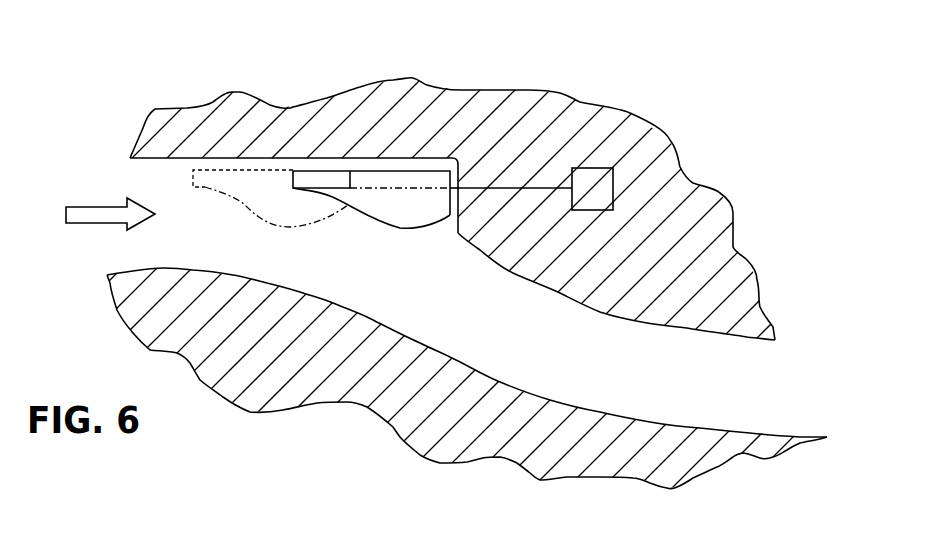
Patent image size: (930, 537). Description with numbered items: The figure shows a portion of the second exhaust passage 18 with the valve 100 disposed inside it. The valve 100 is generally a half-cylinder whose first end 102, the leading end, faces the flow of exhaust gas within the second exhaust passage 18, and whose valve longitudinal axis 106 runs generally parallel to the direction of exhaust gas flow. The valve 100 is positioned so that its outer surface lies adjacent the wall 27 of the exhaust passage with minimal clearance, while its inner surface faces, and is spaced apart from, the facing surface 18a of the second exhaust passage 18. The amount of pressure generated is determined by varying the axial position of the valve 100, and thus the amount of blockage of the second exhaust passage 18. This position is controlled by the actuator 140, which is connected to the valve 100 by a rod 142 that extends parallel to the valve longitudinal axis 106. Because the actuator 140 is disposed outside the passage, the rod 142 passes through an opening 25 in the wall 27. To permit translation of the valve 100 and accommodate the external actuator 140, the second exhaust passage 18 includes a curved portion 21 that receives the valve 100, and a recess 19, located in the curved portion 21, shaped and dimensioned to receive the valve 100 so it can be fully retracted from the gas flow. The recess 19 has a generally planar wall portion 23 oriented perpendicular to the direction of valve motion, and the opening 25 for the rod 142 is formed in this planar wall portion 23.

The second exhaust passage 18 is at (166, 173).
The facing surface 18a is at (268, 278).
The recess 19 is at (448, 157).
The curved portion 21 is at (298, 268).
The planar wall portion 23 is at (453, 214).
The opening 25 is at (460, 188).
The wall 27 is at (534, 284).
The valve 100 is at (403, 177).
The first end 102 is at (293, 184).
The valve longitudinal axis 106 is at (349, 178).
The actuator 140 is at (597, 178).
The rod 142 is at (550, 187).